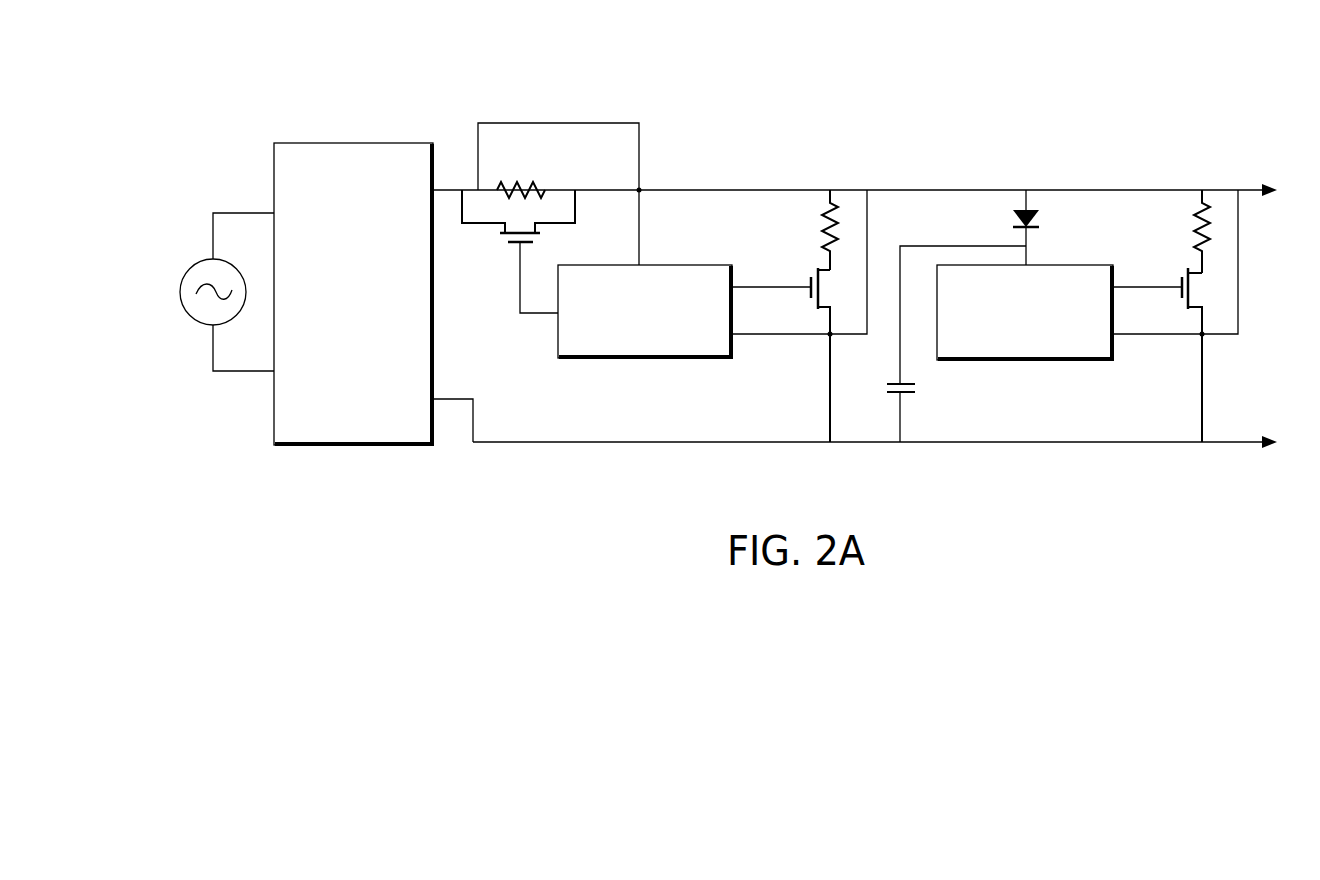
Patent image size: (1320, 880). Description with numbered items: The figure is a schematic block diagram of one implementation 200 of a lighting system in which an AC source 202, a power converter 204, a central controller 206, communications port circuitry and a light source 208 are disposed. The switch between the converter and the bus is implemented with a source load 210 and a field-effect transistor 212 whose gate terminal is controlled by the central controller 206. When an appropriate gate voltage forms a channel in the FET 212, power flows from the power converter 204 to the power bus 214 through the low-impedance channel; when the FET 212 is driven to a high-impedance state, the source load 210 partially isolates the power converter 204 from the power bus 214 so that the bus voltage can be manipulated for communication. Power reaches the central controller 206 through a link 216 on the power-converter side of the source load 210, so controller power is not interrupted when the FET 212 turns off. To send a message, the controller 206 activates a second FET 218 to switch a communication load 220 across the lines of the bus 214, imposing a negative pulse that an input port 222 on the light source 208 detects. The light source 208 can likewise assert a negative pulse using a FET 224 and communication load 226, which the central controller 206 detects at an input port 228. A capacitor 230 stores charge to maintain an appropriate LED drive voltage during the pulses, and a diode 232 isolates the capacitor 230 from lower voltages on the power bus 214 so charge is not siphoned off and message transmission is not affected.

The lighting system implementation 200 is at (945, 72).
The AC source 202 is at (208, 258).
The power converter 204 is at (351, 143).
The central controller 206 is at (610, 360).
The light source 208 is at (1022, 361).
The source load 210 is at (528, 182).
The field-effect transistor 212 is at (502, 229).
The power bus 214 is at (972, 175).
The link 216 is at (605, 123).
The second FET 218 is at (817, 268).
The communication load 220 is at (822, 215).
The input port 222 is at (1230, 340).
The FET 224 is at (1188, 268).
The communication load 226 is at (1193, 218).
The input port 228 is at (802, 332).
The capacitor 230 is at (912, 391).
The diode 232 is at (1013, 211).